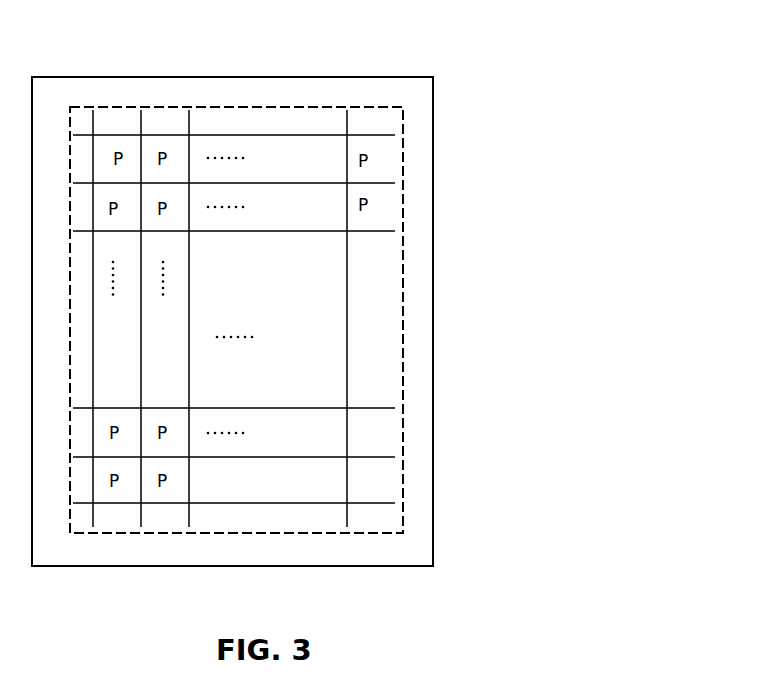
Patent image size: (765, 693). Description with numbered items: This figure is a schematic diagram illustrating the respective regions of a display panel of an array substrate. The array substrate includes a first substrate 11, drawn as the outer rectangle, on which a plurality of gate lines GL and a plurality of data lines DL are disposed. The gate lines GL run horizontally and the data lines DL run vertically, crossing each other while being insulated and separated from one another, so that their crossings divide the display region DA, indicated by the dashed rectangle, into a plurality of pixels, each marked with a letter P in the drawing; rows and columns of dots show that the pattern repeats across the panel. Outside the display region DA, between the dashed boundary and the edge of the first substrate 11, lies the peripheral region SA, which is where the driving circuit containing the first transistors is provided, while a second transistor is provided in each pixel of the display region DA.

The first substrate 11 is at (380, 76).
The peripheral region SA is at (120, 88).
The display region DA is at (210, 104).
The gate lines GL is at (387, 132).
The data lines DL is at (348, 518).